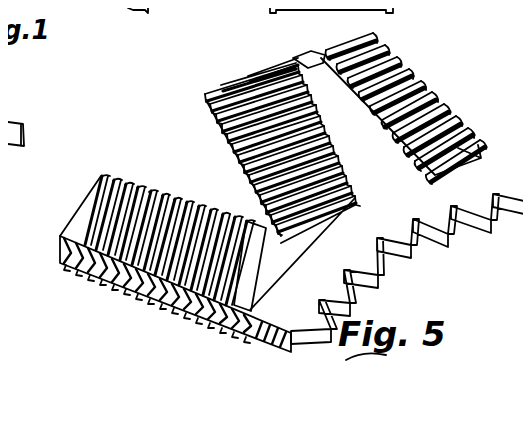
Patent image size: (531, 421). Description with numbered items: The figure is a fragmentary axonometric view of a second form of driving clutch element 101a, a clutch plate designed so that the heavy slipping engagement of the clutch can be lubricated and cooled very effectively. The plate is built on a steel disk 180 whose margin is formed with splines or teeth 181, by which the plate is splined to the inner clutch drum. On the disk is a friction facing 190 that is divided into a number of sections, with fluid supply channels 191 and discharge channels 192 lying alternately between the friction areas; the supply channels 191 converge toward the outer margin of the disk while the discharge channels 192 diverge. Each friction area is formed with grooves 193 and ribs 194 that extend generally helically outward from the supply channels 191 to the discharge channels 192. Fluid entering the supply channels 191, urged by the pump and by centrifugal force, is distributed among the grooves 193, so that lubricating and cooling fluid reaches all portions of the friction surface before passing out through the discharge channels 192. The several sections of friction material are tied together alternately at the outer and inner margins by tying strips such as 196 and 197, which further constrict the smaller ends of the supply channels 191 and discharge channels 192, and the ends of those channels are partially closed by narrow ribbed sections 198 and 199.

The friction facing 190 is at (80, 189).
The discharge channels 192 is at (188, 148).
The grooves 193 is at (157, 180).
The ribs 194 is at (175, 305).
The tying strip 196 is at (314, 78).
The tying strip 197 is at (237, 201).
The narrow ribbed section 198 is at (290, 46).
The narrow ribbed section 199 is at (283, 241).
The steel disk 180 is at (262, 338).
The fluid supply channels 191 is at (398, 170).
The splines or teeth 181 is at (486, 226).
The driving clutch element 101a is at (453, 110).